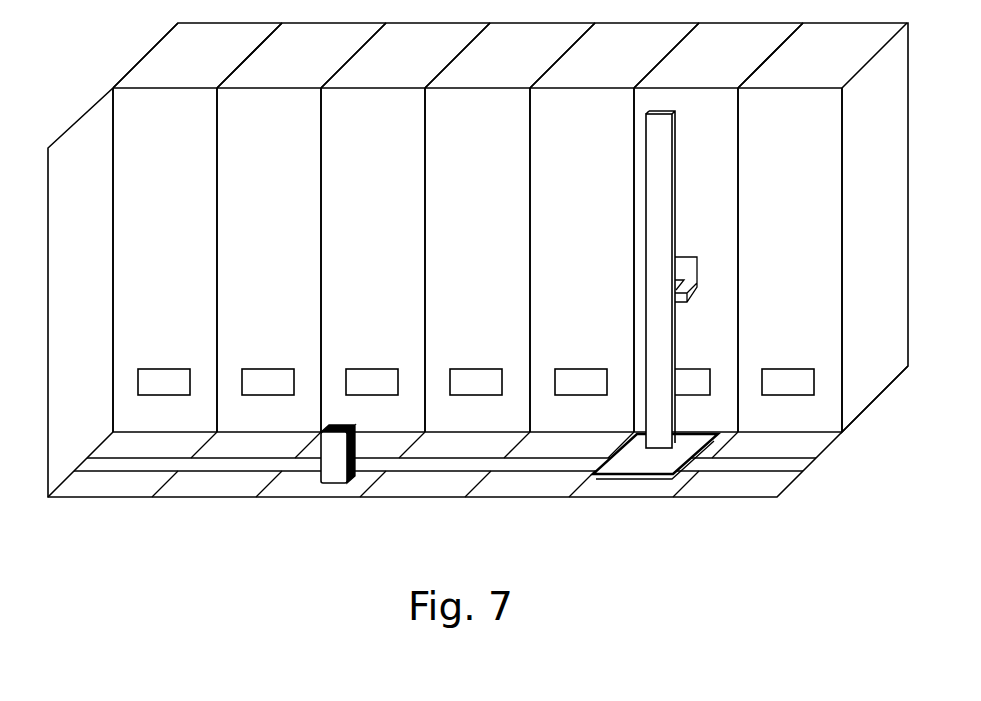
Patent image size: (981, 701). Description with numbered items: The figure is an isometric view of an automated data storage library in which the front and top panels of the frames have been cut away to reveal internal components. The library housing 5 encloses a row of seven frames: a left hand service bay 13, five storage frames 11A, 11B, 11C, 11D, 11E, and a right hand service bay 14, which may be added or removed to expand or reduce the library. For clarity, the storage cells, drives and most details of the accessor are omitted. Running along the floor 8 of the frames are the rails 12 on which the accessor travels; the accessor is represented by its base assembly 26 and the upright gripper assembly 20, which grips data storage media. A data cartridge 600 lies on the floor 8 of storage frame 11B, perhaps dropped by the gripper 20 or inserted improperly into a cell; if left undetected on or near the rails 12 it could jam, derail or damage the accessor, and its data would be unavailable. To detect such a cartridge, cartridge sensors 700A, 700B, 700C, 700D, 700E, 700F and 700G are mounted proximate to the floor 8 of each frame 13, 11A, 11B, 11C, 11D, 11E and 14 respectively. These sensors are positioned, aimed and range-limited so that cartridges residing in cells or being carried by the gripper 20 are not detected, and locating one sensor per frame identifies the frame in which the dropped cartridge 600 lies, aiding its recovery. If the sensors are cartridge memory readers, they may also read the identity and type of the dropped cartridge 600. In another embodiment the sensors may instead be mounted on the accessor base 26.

The housing 5 is at (101, 99).
The left hand service bay 13 is at (197, 227).
The storage frame 11A is at (301, 227).
The storage frame 11B is at (405, 227).
The storage frame 11C is at (510, 227).
The storage frame 11D is at (614, 227).
The storage frame 11E is at (718, 227).
The right hand service bay 14 is at (822, 227).
The floor 8 is at (412, 483).
The rails 12 is at (230, 471).
The base assembly 26 is at (645, 460).
The gripper assembly 20 is at (683, 268).
The data cartridge 600 is at (333, 457).
The cartridge sensor 700A is at (164, 370).
The cartridge sensor 700B is at (268, 370).
The cartridge sensor 700C is at (372, 370).
The cartridge sensor 700D is at (476, 370).
The cartridge sensor 700E is at (581, 370).
The cartridge sensor 700F is at (697, 370).
The cartridge sensor 700G is at (788, 370).